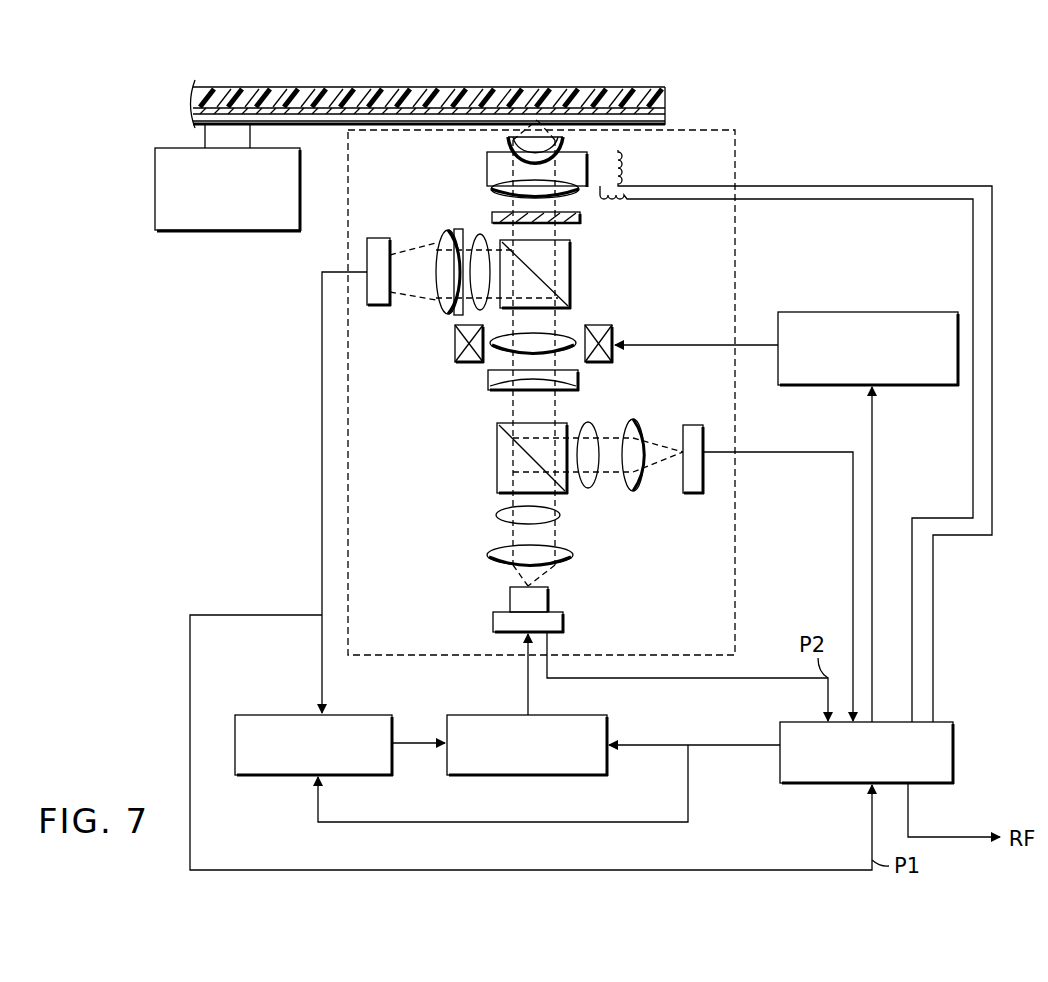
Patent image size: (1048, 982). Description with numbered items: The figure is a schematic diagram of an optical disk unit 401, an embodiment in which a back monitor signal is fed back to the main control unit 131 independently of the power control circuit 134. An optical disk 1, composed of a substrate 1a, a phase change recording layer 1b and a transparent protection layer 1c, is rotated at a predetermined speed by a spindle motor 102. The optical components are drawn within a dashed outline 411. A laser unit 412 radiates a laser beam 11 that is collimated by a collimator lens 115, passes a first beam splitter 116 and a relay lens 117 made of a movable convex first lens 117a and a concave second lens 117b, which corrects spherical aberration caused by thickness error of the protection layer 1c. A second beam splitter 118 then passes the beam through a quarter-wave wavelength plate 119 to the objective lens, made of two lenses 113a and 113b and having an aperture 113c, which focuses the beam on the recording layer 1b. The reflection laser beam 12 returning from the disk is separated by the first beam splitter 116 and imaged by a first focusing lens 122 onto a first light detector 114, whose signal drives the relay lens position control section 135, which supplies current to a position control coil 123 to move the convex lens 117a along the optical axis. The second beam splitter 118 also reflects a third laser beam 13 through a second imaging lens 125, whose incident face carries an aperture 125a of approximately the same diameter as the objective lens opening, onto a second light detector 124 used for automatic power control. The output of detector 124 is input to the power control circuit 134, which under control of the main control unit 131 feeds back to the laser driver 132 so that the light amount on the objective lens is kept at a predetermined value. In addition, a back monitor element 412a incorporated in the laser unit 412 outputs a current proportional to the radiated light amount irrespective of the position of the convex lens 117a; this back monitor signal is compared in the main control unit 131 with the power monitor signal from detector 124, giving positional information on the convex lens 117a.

The optical disk 1 is at (287, 87).
The substrate 1a is at (492, 96).
The recording layer 1b is at (548, 101).
The transparent protection layer 1c is at (600, 110).
The spindle motor 102 is at (235, 233).
The optical disk unit 401 is at (826, 134).
The optical pickup housing 411 is at (737, 245).
The objective lens element 113a is at (508, 150).
The aperture of objective lens 113c is at (494, 190).
The objective lens element 113b is at (576, 196).
The λ/4 wavelength plate 119 is at (580, 224).
The second beam splitter 118 is at (572, 283).
The second light detector 124 is at (366, 255).
The aperture 125a is at (454, 230).
The second imaging lens 125 is at (446, 305).
The third laser beam 13 is at (478, 242).
The position control coil 123 is at (463, 363).
The first lens of relay lens 117a is at (578, 352).
The second lens of relay lens 117b is at (580, 382).
The relay lens 117 is at (656, 362).
The first beam splitter 116 is at (497, 456).
The laser beam 11 is at (527, 517).
The reflection laser beam 12 is at (588, 488).
The first focusing lens 122 is at (634, 492).
The first light detector 114 is at (694, 495).
The collimator lens 115 is at (487, 556).
The laser unit 412 is at (492, 623).
The back monitor element 412a is at (563, 631).
The relay lens position control section 135 is at (870, 311).
The main control unit 131 is at (958, 757).
The laser driver 132 is at (608, 772).
The power control circuit 134 is at (270, 778).